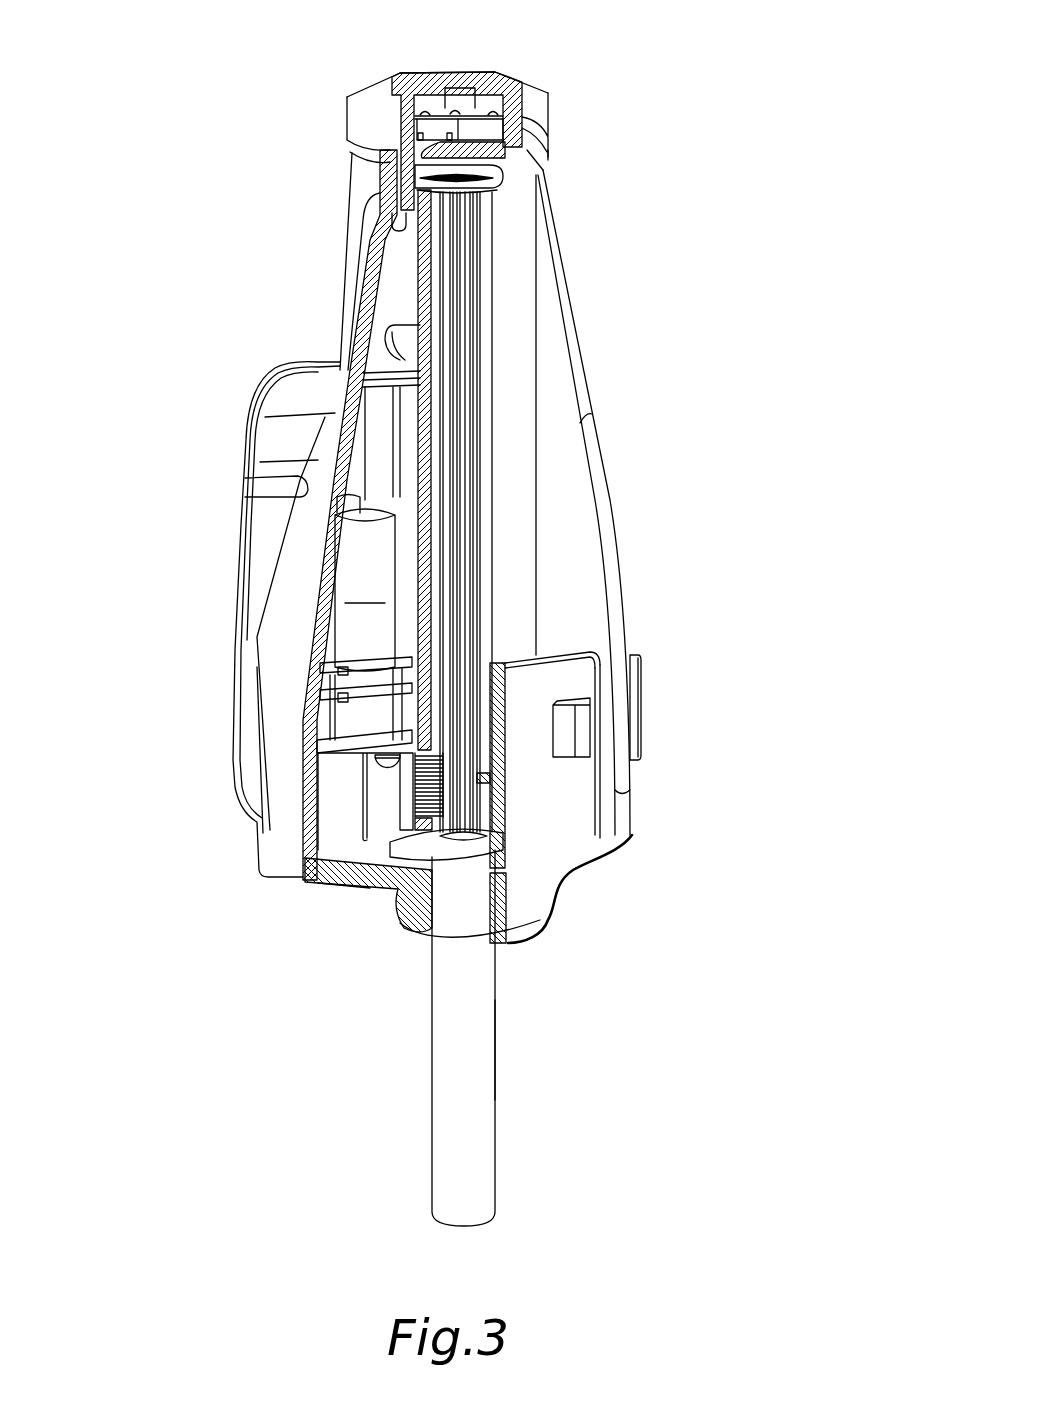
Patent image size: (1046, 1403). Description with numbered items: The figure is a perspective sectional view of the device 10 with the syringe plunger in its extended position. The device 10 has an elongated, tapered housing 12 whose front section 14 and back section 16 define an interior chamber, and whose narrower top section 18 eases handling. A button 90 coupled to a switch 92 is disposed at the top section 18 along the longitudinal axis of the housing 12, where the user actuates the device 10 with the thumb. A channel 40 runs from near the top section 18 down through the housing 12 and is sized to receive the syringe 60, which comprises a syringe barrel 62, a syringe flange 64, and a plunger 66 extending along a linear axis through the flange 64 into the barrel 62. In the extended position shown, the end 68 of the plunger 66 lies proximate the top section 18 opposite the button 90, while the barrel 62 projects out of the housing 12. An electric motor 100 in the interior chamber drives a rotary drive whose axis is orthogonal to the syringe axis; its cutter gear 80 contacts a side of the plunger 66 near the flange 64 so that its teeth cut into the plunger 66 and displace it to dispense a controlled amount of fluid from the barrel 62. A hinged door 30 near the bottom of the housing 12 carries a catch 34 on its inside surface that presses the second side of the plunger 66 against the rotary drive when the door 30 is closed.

The device 10 is at (463, 546).
The housing 12 is at (587, 390).
The front section 14 is at (565, 282).
The back section 16 is at (253, 413).
The top section 18 is at (540, 107).
The hinged door 30 is at (570, 780).
The catch 34 is at (505, 793).
The channel 40 is at (433, 283).
The syringe 60 is at (433, 1120).
The syringe barrel 62 is at (497, 1072).
The syringe flange 64 is at (393, 887).
The plunger 66 is at (463, 473).
The end of the plunger 68 is at (503, 180).
The cutter gear 80 is at (420, 803).
The button 90 is at (373, 93).
The switch 92 is at (472, 130).
The electric motor 100 is at (368, 539).